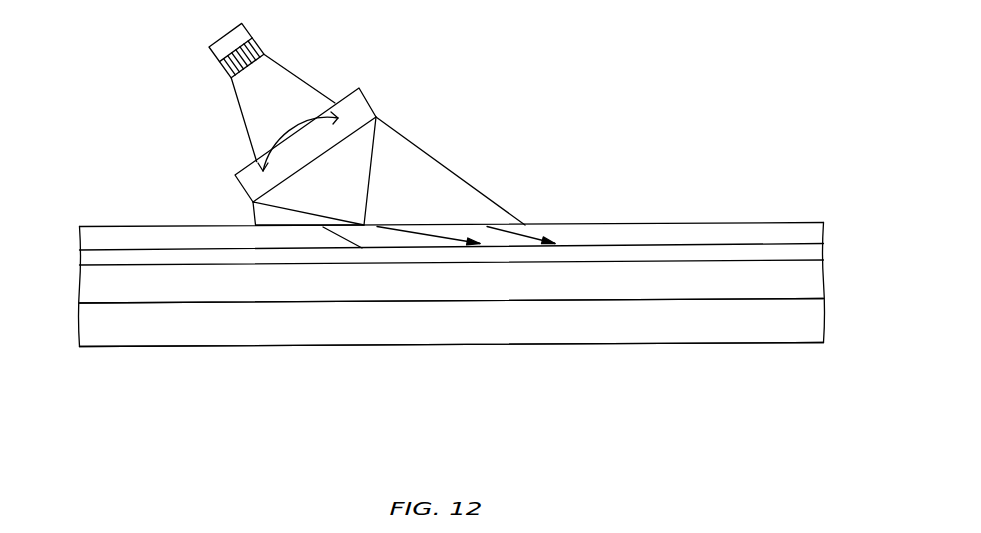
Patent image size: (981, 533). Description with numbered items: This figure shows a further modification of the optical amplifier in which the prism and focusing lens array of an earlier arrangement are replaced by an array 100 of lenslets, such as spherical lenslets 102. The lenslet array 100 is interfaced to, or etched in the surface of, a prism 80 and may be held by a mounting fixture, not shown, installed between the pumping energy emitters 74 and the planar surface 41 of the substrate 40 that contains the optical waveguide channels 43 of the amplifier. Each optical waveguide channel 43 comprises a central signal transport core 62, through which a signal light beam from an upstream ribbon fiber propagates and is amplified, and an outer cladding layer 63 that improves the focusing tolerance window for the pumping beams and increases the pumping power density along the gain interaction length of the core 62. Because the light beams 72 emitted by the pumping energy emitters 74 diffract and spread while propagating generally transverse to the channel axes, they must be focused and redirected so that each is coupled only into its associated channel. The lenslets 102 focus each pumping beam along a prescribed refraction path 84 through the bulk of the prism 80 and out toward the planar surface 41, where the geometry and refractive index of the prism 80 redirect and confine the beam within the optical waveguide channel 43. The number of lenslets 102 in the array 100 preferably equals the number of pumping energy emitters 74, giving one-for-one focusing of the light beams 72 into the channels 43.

The substrate 40 is at (835, 317).
The planar surface 41 is at (605, 222).
The optical waveguide channel 43 is at (211, 292).
The signal transport core 62 is at (88, 259).
The outer cladding layer 63 is at (73, 282).
The light beams 72 is at (277, 74).
The pumping energy emitters 74 is at (216, 56).
The prism 80 is at (452, 177).
The refraction path 84 is at (346, 197).
The lenslet array 100 is at (359, 88).
The spherical lenslets 102 is at (282, 133).